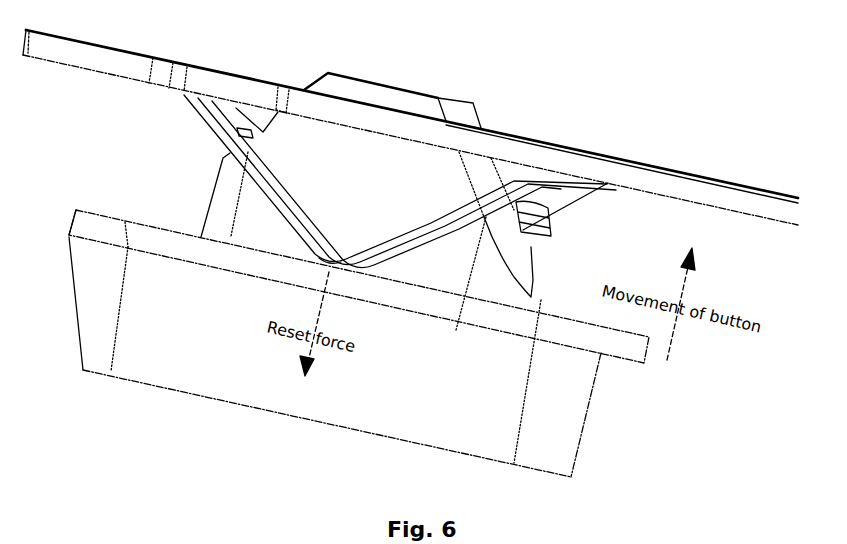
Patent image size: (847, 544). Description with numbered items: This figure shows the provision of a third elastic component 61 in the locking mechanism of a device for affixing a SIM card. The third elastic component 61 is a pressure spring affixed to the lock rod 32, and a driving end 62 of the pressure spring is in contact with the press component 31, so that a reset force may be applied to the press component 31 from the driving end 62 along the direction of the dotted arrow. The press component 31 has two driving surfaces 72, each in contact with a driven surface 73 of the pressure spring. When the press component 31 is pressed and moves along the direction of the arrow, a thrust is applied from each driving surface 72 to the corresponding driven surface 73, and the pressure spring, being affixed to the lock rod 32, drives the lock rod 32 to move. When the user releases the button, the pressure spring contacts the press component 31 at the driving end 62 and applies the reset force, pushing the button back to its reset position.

The press component 31 is at (353, 285).
The lock rod 32 is at (723, 193).
The third elastic component 61 is at (430, 234).
The driving end 62 is at (342, 261).
The driving surface 72 is at (251, 132).
The driven surface 73 is at (238, 133).